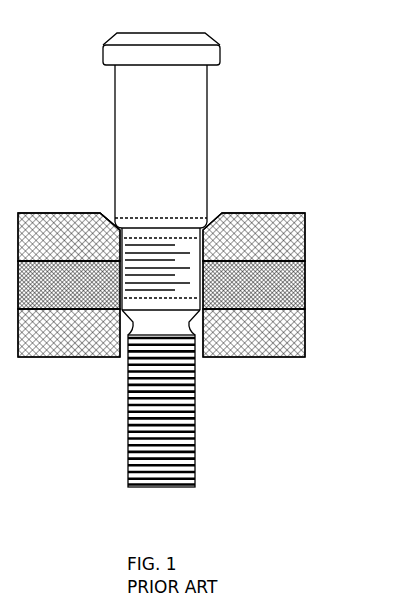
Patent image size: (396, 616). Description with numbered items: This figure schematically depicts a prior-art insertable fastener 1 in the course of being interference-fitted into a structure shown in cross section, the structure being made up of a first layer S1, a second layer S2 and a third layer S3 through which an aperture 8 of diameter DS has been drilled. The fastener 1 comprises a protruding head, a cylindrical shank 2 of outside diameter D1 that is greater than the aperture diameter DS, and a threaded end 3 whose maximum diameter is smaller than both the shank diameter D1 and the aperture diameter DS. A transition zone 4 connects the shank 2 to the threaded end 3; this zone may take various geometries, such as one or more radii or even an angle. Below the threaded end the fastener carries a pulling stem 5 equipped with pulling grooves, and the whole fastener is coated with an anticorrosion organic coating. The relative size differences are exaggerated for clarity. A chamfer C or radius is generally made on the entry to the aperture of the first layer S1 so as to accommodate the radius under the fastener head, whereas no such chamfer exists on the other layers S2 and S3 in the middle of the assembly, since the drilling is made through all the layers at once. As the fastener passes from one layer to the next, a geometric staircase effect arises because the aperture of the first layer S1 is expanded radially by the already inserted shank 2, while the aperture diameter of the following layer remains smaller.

The fastener 1 is at (178, 257).
The cylindrical shank 2 is at (115, 93).
The threaded end 3 is at (200, 235).
The transition zone 4 is at (148, 222).
The pulling stem 5 is at (195, 418).
The aperture 8 is at (125, 345).
The chamfer C is at (108, 216).
The outside diameter of the cylindrical shank D1 is at (82, 122).
The aperture diameter DS is at (236, 240).
The first layer S1 is at (291, 212).
The second layer S2 is at (305, 275).
The third layer S3 is at (305, 336).